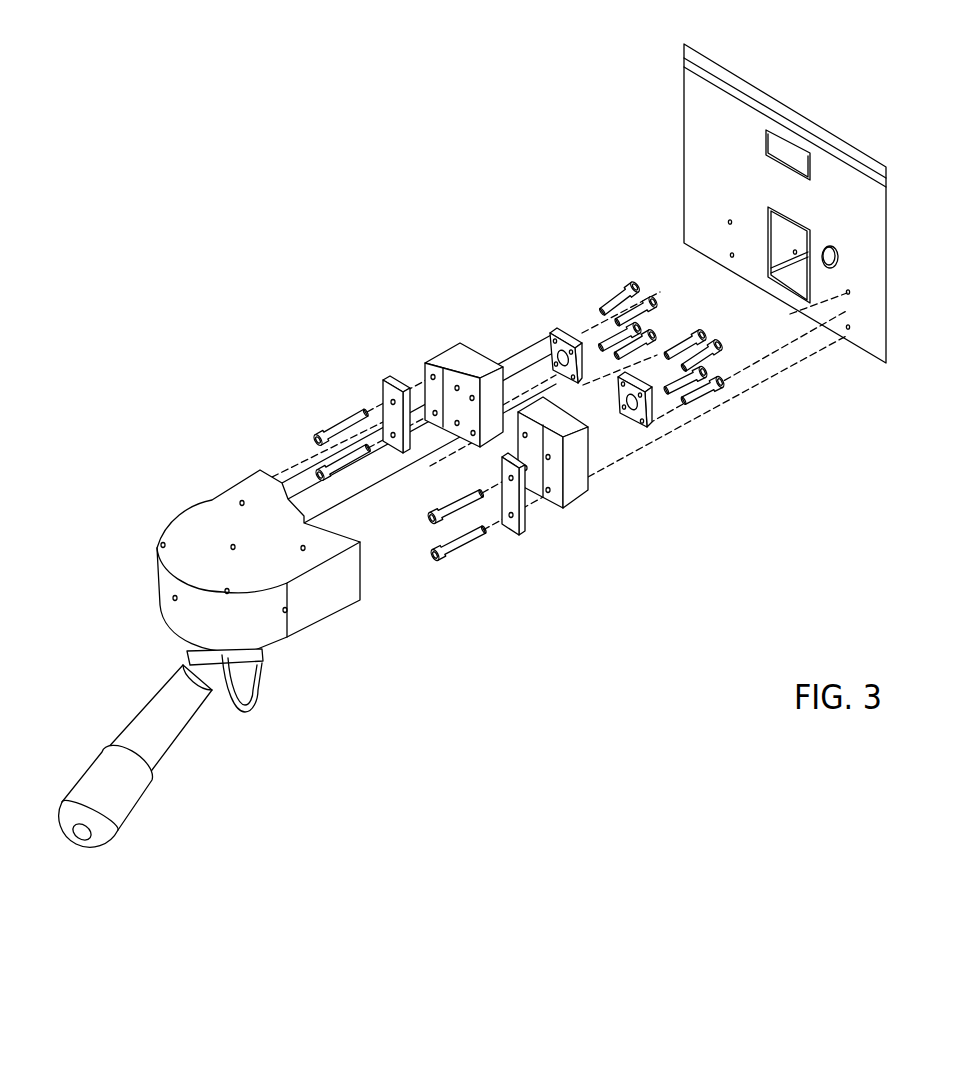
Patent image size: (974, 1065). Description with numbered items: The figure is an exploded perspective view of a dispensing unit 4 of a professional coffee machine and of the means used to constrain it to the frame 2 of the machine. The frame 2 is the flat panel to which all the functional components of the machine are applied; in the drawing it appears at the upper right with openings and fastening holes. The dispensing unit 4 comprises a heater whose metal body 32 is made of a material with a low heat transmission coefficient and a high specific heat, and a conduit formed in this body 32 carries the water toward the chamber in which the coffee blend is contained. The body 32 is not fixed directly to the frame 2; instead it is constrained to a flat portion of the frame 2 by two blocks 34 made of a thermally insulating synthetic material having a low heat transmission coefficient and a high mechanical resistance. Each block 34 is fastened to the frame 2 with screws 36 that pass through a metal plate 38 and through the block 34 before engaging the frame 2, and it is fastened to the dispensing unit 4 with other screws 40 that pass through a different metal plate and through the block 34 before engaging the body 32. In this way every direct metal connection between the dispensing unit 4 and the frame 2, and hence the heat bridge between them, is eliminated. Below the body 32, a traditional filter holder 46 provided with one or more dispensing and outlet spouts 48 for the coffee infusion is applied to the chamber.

The frame 2 is at (868, 250).
The dispensing unit 4 is at (355, 587).
The metal body 32 is at (197, 520).
The block 34 is at (578, 487).
The screws 36 is at (465, 537).
The metal plate 38 is at (517, 522).
The screws 40 is at (702, 392).
The filter holder 46 is at (162, 740).
The dispensing and outlet spout 48 is at (243, 713).